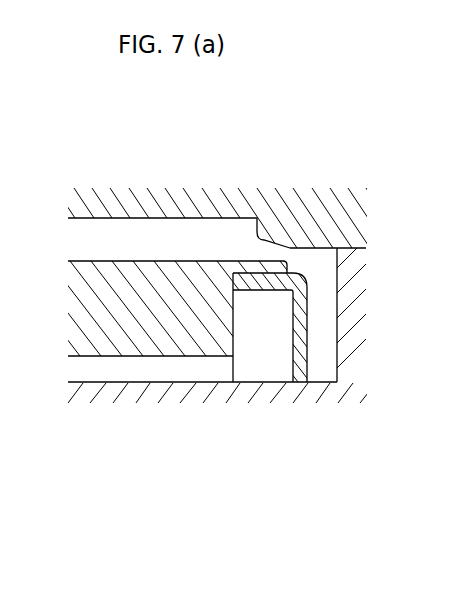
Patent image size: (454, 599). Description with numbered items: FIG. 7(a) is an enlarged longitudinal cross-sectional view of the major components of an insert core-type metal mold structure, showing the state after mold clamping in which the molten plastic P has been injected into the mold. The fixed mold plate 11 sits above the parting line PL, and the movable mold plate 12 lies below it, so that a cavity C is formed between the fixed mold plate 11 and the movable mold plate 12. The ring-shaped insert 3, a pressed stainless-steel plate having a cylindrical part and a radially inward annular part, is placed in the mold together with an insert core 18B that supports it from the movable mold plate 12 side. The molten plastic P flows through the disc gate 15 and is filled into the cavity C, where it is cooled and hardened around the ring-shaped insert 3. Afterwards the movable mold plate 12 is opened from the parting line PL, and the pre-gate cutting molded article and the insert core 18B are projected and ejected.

The fixed mold plate 11 is at (313, 217).
The movable mold plate 12 is at (312, 393).
The disc gate 15 is at (257, 220).
The insert core 18B is at (141, 343).
The ring-shaped insert 3 is at (260, 291).
The cavity C is at (80, 237).
The molten plastic P is at (122, 230).
The parting line PL is at (344, 248).